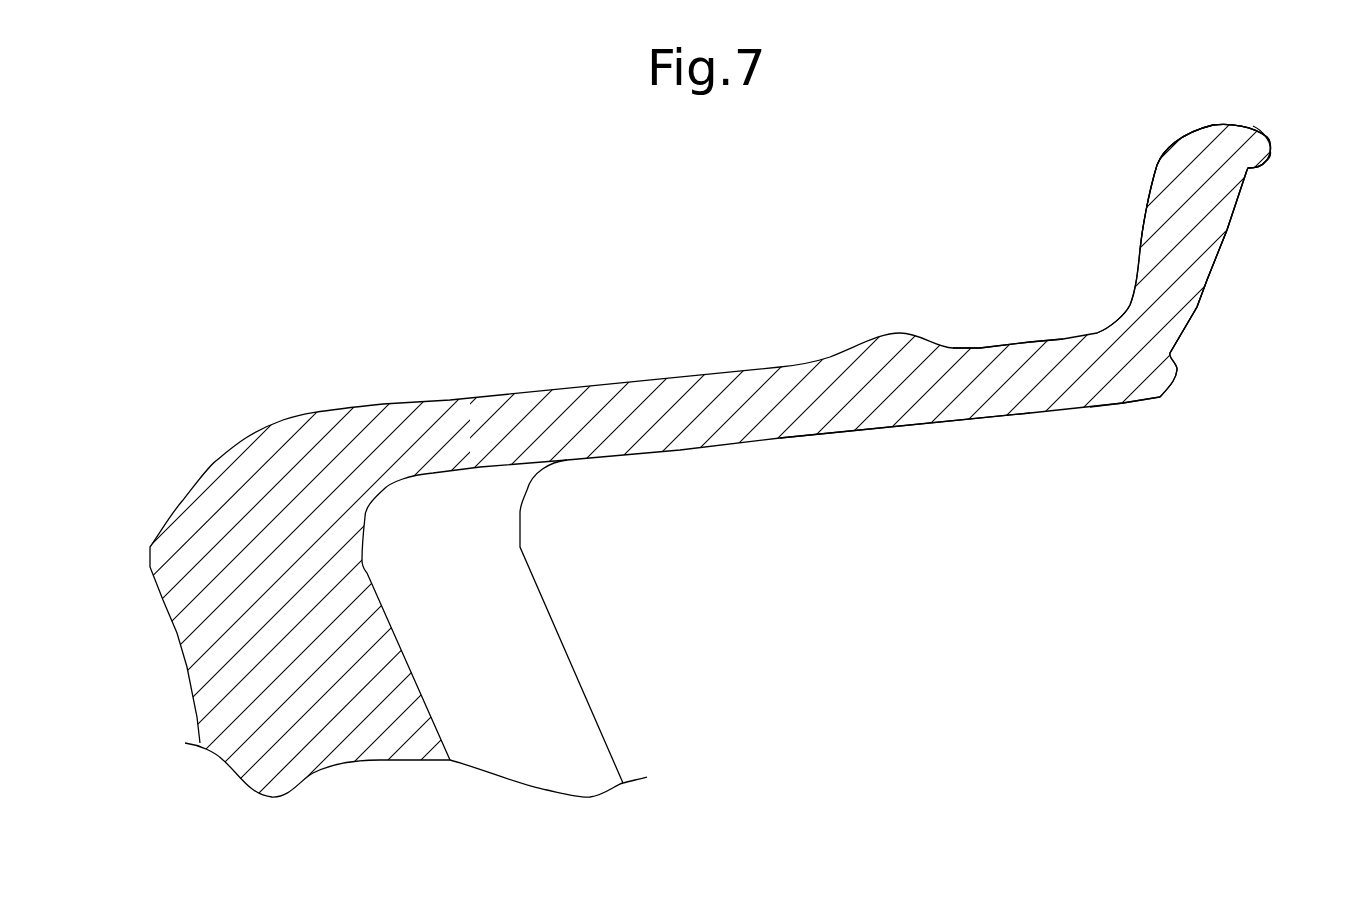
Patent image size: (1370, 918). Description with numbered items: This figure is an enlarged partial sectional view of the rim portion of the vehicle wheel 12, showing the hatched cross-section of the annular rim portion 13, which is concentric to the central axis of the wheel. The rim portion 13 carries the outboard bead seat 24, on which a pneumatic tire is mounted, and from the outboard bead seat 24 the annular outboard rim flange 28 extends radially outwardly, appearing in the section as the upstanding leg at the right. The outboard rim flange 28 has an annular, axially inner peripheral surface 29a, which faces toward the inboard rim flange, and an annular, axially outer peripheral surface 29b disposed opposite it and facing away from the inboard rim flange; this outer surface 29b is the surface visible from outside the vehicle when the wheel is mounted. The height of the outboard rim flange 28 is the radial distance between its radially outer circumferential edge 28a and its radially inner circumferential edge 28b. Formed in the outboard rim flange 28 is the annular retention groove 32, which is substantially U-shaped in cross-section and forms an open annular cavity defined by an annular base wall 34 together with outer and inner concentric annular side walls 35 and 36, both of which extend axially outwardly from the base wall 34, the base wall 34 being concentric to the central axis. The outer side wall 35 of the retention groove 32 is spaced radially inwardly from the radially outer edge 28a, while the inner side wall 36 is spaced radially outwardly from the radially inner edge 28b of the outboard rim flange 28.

The vehicle wheel 12 is at (175, 440).
The annular rim portion 13 is at (866, 429).
The outboard bead seat 24 is at (1000, 343).
The outboard rim flange 28 is at (1153, 195).
The radially outer circumferential edge 28a is at (1218, 123).
The radially inner circumferential edge 28b is at (1123, 405).
The axially inner peripheral surface 29a is at (1138, 267).
The axially outer peripheral surface 29b is at (1271, 150).
The annular retention groove 32 is at (1232, 252).
The annular base wall 34 is at (1200, 307).
The outer annular side wall 35 is at (1263, 167).
The inner annular side wall 36 is at (1172, 360).